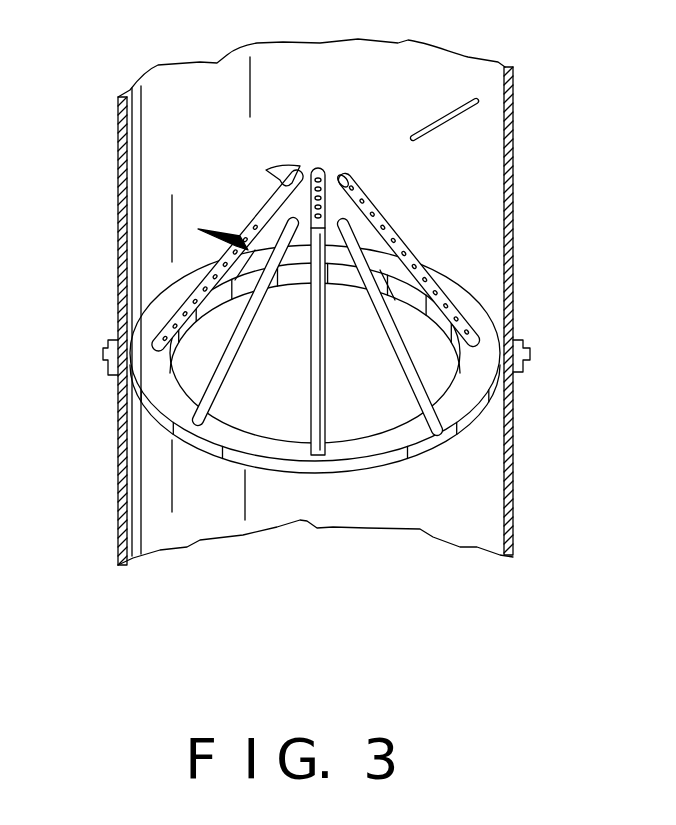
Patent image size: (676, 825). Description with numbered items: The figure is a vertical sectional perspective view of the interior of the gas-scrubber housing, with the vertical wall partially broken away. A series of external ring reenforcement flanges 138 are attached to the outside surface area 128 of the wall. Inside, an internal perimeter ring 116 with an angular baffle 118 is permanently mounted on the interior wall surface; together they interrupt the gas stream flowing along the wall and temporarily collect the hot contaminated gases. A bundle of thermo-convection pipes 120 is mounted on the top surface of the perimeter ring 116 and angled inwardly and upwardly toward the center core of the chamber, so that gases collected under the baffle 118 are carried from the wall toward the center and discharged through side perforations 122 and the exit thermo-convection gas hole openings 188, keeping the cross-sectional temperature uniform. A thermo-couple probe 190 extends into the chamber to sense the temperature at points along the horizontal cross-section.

The outside surface area 128 is at (516, 128).
The internal perimeter ring 116 is at (483, 305).
The angular baffle 118 is at (483, 362).
The external ring reenforcement flange 138 is at (107, 350).
The thermo-convection pipe 120 is at (422, 262).
The perforation 122 is at (200, 230).
The exit thermo-convection gas hole opening 188 is at (268, 168).
The probe 190 is at (435, 120).